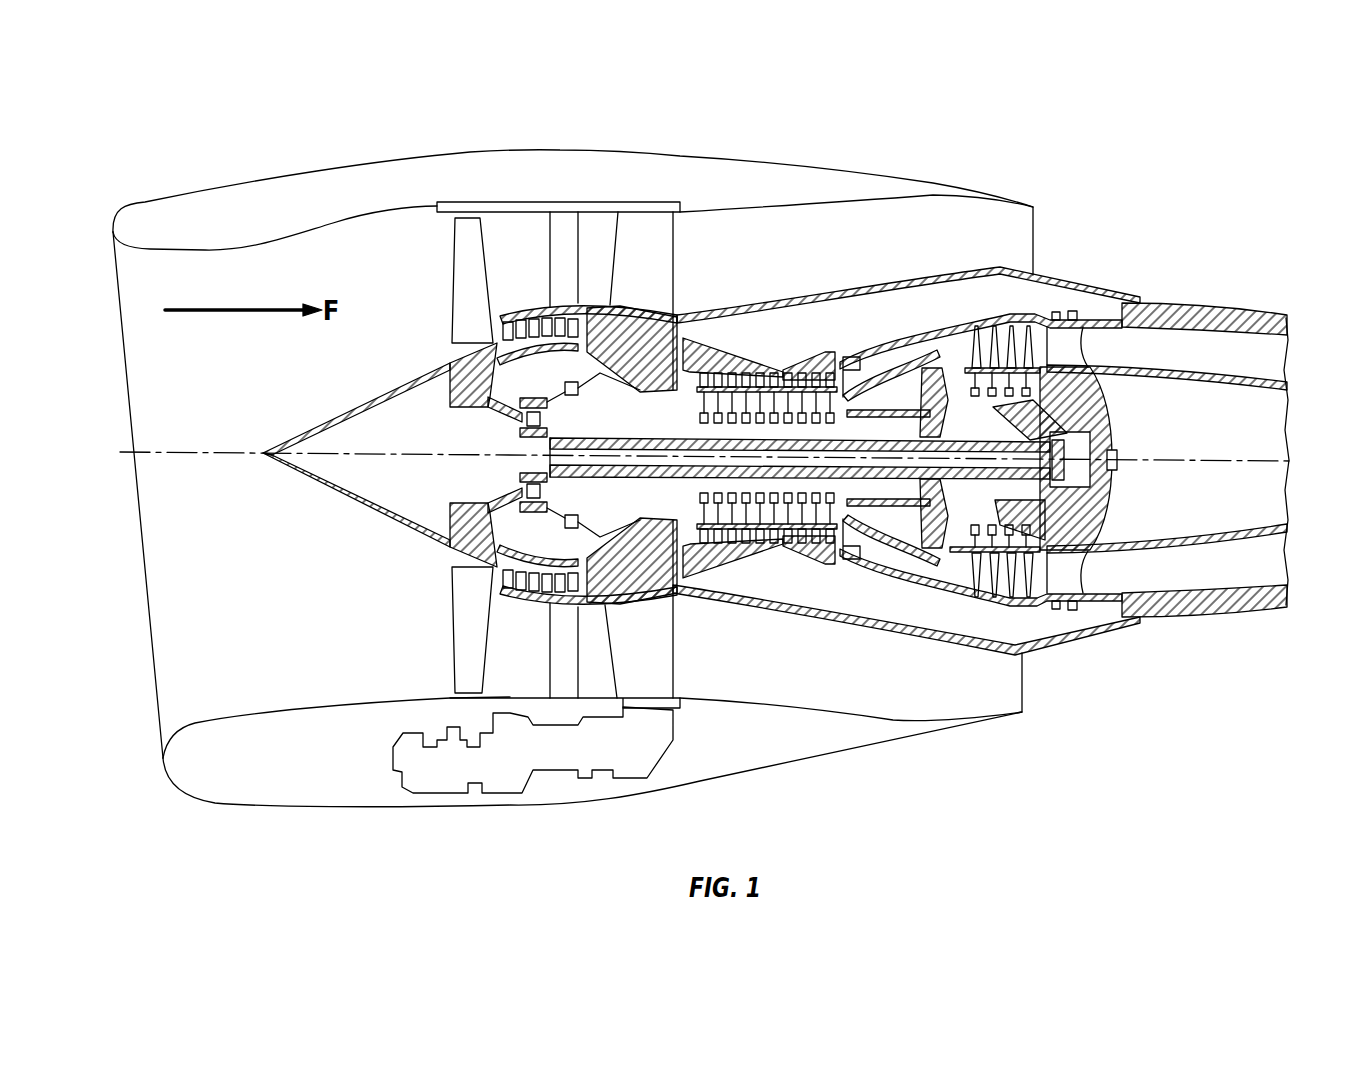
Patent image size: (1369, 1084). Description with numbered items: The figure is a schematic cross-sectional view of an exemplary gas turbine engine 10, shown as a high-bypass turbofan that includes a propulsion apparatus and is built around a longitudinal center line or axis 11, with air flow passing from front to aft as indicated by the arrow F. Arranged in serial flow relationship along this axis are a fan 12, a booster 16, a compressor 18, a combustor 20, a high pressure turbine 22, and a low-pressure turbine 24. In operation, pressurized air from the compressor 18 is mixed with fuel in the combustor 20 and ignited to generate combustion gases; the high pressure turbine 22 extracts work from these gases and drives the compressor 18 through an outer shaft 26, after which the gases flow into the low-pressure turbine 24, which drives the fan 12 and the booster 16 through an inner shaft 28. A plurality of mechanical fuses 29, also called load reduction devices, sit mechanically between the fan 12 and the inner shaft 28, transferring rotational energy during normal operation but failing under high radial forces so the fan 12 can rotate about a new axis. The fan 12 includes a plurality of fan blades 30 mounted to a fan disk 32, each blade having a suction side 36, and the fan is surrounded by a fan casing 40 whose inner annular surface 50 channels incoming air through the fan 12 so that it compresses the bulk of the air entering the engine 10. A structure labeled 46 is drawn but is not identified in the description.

The gas turbine engine 10 is at (1053, 243).
The longitudinal center line or axis 11 is at (178, 450).
The fan 12 is at (403, 550).
The booster 16 is at (528, 585).
The compressor 18 is at (740, 364).
The combustor 20 is at (890, 367).
The high pressure turbine 22 is at (930, 560).
The low-pressure turbine 24 is at (982, 327).
The outer shaft 26 is at (880, 540).
The inner shaft 28 is at (596, 438).
The mechanical fuse 29 is at (573, 382).
The fan blade 30 is at (425, 312).
The fan disk 32 is at (467, 388).
The suction side 36 is at (687, 502).
The fan casing 40 is at (550, 205).
The core inlet structure 46 is at (702, 552).
The inner annular surface 50 is at (453, 220).